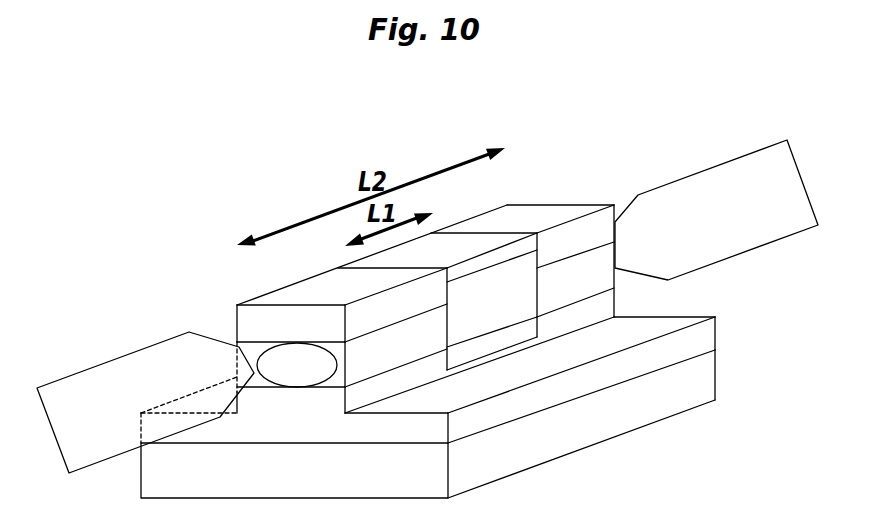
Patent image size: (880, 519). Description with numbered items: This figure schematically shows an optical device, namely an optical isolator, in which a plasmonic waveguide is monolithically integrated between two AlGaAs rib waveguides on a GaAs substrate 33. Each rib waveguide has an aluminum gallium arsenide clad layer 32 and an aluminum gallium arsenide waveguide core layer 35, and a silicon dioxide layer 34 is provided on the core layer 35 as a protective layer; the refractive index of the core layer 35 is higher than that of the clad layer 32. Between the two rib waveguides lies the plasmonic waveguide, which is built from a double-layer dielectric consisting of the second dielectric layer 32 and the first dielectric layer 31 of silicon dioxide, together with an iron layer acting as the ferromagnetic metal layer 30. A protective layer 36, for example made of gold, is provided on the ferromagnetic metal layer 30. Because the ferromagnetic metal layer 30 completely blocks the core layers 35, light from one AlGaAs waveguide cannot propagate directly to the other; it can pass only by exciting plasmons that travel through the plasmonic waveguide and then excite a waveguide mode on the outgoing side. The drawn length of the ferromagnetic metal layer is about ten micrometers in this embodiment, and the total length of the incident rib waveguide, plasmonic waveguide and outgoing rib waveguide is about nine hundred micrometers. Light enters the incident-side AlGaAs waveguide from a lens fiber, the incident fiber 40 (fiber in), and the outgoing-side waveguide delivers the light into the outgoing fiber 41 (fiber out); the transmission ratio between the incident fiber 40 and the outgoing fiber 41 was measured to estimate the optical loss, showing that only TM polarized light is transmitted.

The ferromagnetic metal layer 30 is at (492, 301).
The first dielectric layer 31 is at (508, 338).
The second dielectric layer 32 is at (428, 380).
The GaAs substrate 33 is at (428, 424).
The SiO2 layer 34 is at (425, 273).
The waveguide core layer 35 is at (425, 317).
The protective layer 36 is at (498, 255).
The incident fiber 40 is at (112, 358).
The outgoing fiber 41 is at (765, 147).